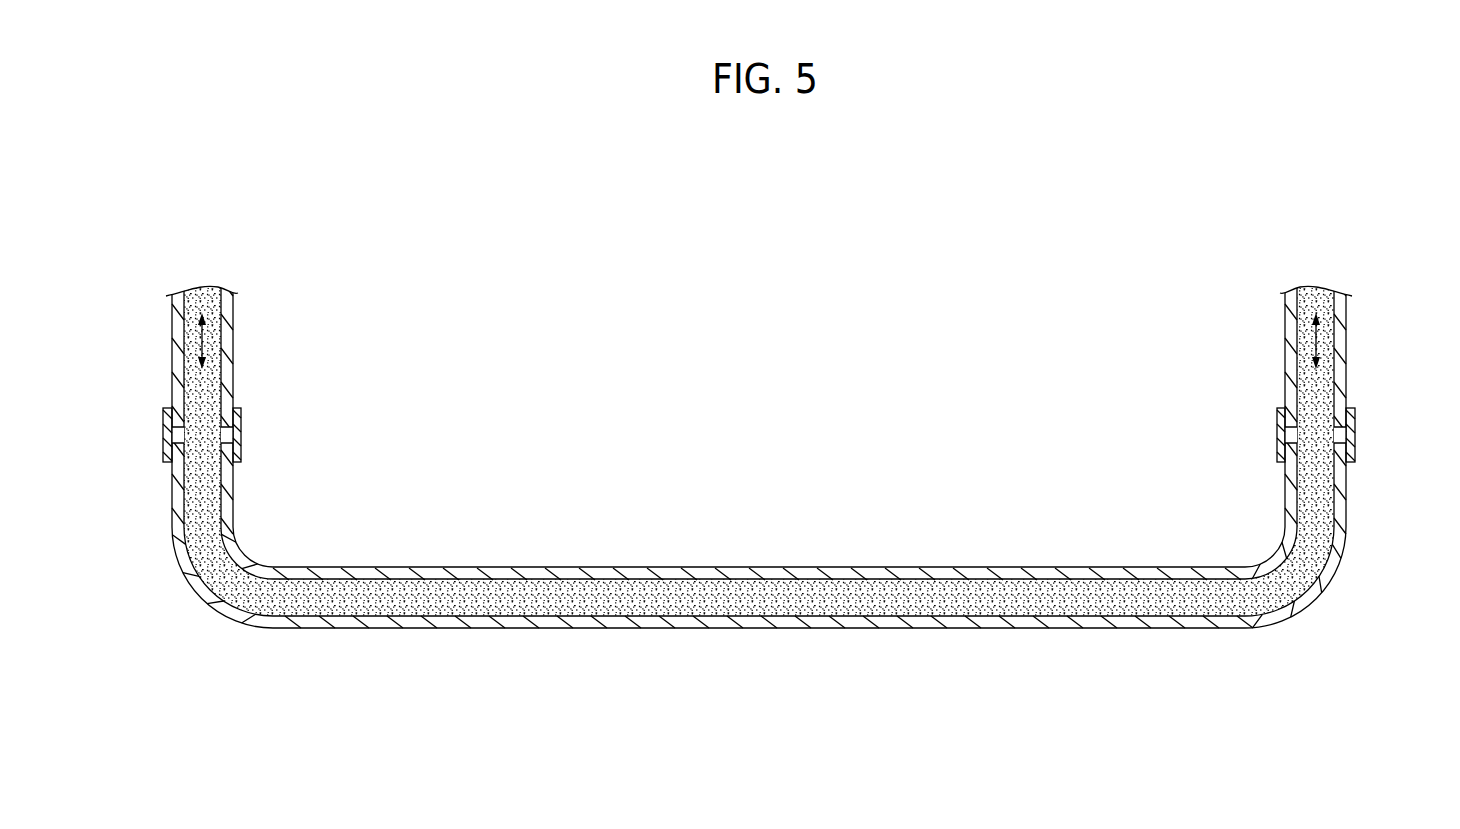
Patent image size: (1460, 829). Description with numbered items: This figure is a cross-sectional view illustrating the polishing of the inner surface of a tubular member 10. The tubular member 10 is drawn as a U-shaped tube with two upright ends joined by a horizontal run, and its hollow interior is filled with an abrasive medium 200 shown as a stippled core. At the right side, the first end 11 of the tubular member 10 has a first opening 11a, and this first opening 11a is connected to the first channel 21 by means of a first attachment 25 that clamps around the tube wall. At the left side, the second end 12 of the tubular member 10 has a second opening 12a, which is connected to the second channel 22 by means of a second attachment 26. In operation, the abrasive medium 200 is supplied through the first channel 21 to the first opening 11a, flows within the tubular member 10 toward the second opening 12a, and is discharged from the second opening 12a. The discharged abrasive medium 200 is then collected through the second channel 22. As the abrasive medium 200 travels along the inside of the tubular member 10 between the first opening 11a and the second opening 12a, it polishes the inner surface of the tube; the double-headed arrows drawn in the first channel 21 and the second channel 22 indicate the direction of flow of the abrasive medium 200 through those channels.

The tubular member 10 is at (635, 630).
The abrasive medium 200 is at (1090, 600).
The second channel 22 is at (233, 330).
The first channel 21 is at (1285, 333).
The second end 12 is at (249, 458).
The first end 11 is at (1271, 458).
The second opening 12a is at (203, 437).
The first opening 11a is at (1317, 437).
The second attachment 26 is at (163, 432).
The first attachment 25 is at (1355, 433).